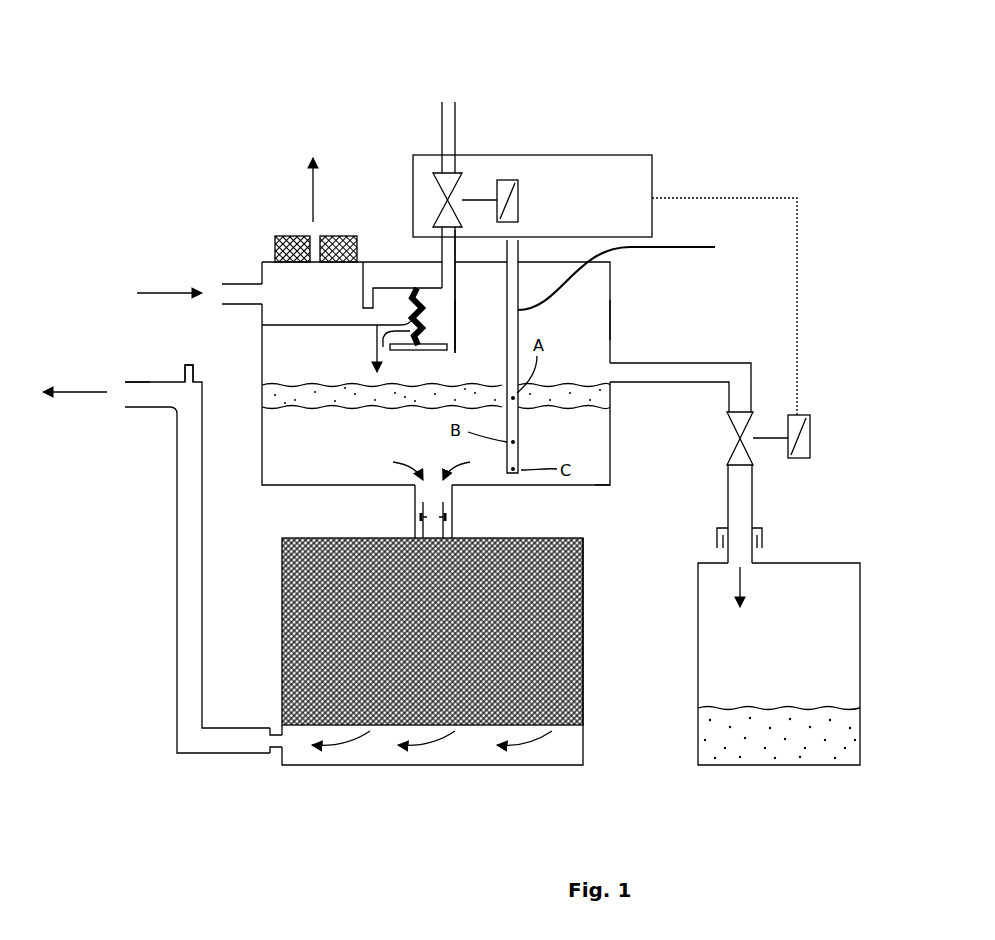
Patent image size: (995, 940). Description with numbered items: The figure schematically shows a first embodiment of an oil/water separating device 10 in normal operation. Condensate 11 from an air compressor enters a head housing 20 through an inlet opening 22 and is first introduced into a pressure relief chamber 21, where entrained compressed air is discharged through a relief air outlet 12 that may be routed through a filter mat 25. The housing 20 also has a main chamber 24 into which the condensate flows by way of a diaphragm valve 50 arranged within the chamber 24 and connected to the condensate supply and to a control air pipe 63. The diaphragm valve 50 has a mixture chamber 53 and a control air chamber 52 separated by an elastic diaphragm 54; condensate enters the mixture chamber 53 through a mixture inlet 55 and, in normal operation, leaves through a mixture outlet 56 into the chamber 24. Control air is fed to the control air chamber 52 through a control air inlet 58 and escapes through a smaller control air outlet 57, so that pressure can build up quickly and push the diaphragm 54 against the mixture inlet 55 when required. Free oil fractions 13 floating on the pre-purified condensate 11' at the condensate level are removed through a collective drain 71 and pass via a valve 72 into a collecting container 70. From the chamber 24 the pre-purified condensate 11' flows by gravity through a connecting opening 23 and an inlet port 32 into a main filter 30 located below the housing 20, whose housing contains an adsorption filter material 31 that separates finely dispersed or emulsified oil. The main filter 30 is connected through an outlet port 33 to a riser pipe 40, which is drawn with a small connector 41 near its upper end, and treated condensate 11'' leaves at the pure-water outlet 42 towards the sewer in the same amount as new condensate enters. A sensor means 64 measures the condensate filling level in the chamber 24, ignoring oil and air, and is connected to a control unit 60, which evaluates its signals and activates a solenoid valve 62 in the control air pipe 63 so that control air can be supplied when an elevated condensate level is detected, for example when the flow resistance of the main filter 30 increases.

The oil/water separating device 10 is at (268, 110).
The condensate 11 is at (169, 262).
The pre-purified condensate 11' is at (602, 513).
The treated condensate 11'' is at (75, 425).
The relief air outlet 12 is at (308, 183).
The free oil fractions 13 is at (592, 384).
The housing 20 is at (612, 285).
The pressure relief chamber 21 is at (283, 320).
The inlet opening 22 is at (248, 283).
The connecting opening 23 is at (455, 520).
The chamber 24 is at (595, 330).
The filter mat 25 is at (348, 240).
The main filter 30 is at (583, 602).
The adsorption filter material 31 is at (583, 665).
The inlet port 32 is at (415, 522).
The outlet port 33 is at (258, 757).
The riser pipe 40 is at (178, 570).
The duct connector 41 is at (195, 370).
The pure-water outlet 42 is at (140, 385).
The diaphragm valve 50 is at (460, 297).
The control air chamber 52 is at (456, 331).
The mixture chamber 53 is at (395, 296).
The elastic diaphragm 54 is at (428, 318).
The mixture inlet 55 is at (370, 320).
The mixture outlet 56 is at (372, 343).
The control air outlet 57 is at (447, 352).
The control air inlet 58 is at (442, 248).
The control unit 60 is at (625, 155).
The valve 62 is at (462, 186).
The control air pipe 63 is at (458, 118).
The sensor means 64 is at (627, 353).
The collecting container 70 is at (833, 570).
The collective drain 71 is at (708, 372).
The valve 72 is at (732, 452).